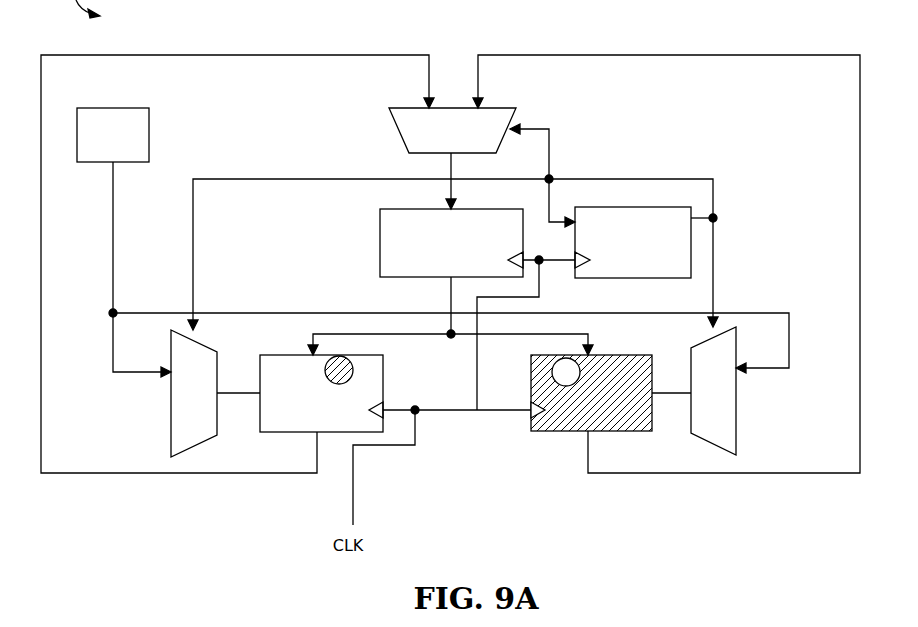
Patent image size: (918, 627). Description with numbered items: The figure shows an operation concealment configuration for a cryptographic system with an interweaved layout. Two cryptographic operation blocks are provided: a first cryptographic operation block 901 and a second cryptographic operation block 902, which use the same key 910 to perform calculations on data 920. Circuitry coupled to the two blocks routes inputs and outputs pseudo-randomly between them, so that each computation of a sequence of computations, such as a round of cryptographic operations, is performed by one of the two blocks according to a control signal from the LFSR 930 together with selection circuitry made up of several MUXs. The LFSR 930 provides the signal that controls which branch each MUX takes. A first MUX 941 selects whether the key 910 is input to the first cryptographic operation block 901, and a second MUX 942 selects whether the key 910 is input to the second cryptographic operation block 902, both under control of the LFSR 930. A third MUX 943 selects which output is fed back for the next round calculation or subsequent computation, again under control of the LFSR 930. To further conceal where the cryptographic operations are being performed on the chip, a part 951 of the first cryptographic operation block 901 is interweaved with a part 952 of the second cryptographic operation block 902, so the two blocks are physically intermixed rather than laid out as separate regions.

The first cryptographic operation block 901 is at (334, 380).
The second cryptographic operation block 902 is at (568, 407).
The key 910 is at (149, 118).
The data 920 is at (451, 243).
The LFSR 930 is at (633, 242).
The first MUX 941 is at (170, 410).
The second MUX 942 is at (738, 421).
The third MUX 943 is at (486, 108).
The part of the first cryptographic operation block 951 is at (353, 368).
The part of the second cryptographic operation block 952 is at (558, 380).